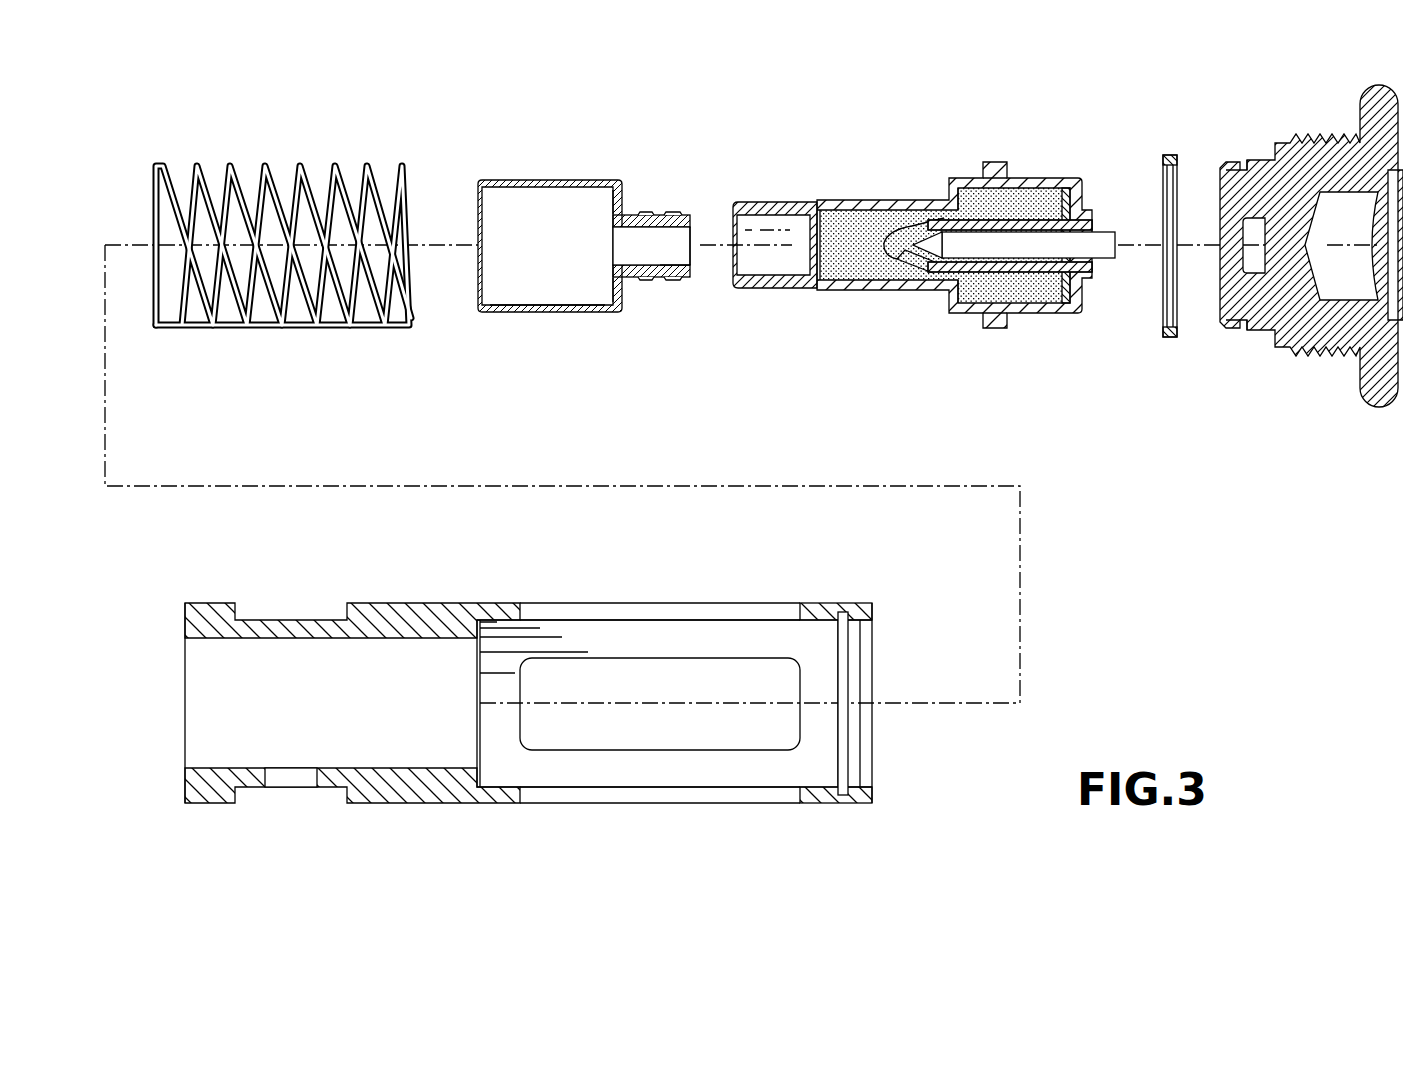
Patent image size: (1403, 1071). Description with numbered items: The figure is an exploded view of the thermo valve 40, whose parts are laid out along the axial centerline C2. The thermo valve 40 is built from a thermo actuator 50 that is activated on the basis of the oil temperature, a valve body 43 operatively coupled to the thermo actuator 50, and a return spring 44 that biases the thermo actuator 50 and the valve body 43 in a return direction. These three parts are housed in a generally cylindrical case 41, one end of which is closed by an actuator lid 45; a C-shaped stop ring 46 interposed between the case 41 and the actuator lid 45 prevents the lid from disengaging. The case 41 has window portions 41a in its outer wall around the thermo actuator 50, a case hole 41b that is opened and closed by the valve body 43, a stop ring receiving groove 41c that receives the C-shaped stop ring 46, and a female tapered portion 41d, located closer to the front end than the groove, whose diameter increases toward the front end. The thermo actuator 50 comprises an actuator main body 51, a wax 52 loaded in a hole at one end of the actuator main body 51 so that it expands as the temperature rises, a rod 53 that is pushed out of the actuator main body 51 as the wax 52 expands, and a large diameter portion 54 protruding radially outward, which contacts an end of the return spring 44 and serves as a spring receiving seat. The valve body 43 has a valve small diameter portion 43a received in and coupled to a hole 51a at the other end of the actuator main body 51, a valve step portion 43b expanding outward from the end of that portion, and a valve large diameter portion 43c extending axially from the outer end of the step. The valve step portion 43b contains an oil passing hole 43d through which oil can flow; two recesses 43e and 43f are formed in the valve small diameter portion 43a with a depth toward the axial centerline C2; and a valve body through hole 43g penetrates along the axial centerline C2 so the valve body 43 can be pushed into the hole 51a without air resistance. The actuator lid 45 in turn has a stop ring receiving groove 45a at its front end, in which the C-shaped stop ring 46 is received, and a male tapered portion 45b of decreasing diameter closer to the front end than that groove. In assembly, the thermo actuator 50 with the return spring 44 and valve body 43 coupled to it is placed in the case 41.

The thermo valve 40 is at (1122, 599).
The case 41 is at (472, 803).
The window portions 41a is at (690, 744).
The case hole 41b is at (300, 771).
The stop ring receiving groove 41c is at (845, 750).
The female tapered portion 41d is at (870, 618).
The valve body 43 is at (524, 180).
The valve small diameter portion 43a is at (683, 214).
The valve step portion 43b is at (628, 282).
The valve large diameter portion 43c is at (534, 312).
The oil passing hole 43d is at (614, 293).
The recess 43e is at (647, 214).
The recess 43f is at (672, 278).
The valve body through hole 43g is at (691, 254).
The return spring 44 is at (264, 160).
The actuator lid 45 is at (1323, 137).
The stop ring receiving groove 45a is at (1247, 322).
The male tapered portion 45b is at (1230, 318).
The C-shaped stop ring 46 is at (1170, 155).
The thermo actuator 50 is at (831, 113).
The actuator main body 51 is at (873, 200).
The hole 51a is at (772, 268).
The wax 52 is at (918, 214).
The rod 53 is at (991, 244).
The large diameter portion 54 is at (997, 162).
The axial centerline C2 is at (956, 486).